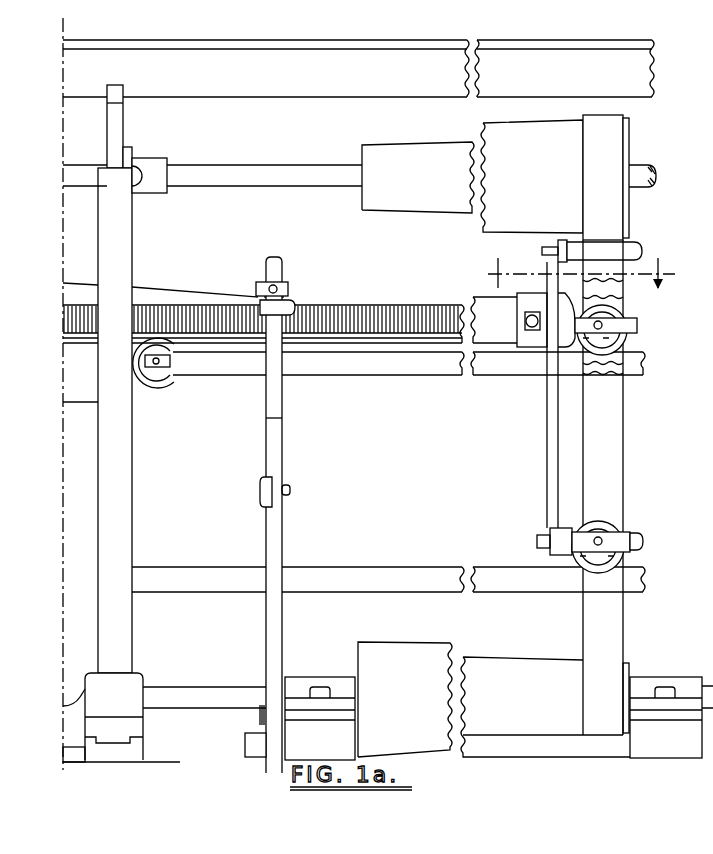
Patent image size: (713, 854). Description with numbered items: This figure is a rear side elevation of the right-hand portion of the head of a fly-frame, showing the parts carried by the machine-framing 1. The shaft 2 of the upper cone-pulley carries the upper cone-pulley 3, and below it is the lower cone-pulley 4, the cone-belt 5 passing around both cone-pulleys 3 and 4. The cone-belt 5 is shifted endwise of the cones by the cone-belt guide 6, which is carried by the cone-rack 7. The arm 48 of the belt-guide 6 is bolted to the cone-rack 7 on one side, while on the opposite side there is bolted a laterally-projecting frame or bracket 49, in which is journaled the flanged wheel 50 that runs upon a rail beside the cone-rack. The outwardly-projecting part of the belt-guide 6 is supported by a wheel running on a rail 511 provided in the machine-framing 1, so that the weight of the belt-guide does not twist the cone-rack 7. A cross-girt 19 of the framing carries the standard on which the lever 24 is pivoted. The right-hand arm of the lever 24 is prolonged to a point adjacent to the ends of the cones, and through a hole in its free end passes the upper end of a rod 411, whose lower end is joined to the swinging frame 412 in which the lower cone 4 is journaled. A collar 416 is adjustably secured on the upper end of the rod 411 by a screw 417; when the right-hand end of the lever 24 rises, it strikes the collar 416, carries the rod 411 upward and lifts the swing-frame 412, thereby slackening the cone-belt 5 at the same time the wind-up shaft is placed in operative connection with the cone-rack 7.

The machine-framing 1 is at (358, 394).
The shaft of the upper cone-pulley 2 is at (660, 163).
The upper cone-pulley 3 is at (495, 177).
The lower cone-pulley 4 is at (494, 699).
The cone-belt 5 is at (606, 487).
The cone-belt guide 6 is at (556, 431).
The cone-rack 7 is at (322, 303).
The cross-girt 19 is at (78, 406).
The lever 24 is at (160, 296).
The arm of the belt-guide 48 is at (560, 540).
The laterally-projecting frame or bracket 49 is at (625, 541).
The flanged wheel 50 is at (597, 524).
The rod 411 is at (284, 457).
The swinging frame 412 is at (499, 718).
The collar 416 is at (291, 291).
The screw 417 is at (270, 284).
The rail 511 is at (388, 472).